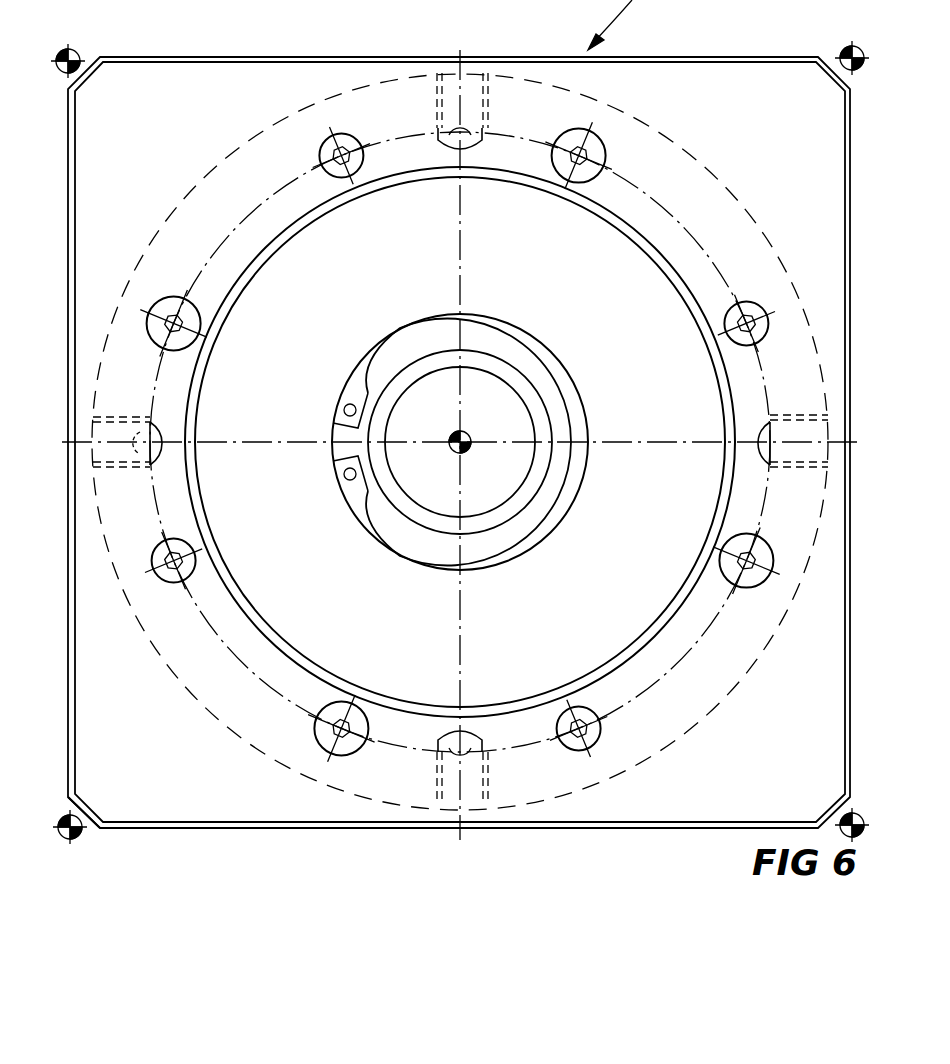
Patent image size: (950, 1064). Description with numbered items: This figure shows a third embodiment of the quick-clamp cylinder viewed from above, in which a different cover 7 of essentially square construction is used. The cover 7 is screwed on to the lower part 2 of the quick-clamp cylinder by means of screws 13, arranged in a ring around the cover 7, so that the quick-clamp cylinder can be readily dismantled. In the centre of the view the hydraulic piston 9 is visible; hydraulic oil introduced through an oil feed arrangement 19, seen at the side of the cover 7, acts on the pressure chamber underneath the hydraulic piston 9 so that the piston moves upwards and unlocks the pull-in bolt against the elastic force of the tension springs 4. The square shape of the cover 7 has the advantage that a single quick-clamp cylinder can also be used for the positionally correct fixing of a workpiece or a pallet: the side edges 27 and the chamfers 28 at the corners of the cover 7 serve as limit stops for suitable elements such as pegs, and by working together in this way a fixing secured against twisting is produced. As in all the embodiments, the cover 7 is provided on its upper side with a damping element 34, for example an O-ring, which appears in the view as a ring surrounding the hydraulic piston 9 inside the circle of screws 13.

The lower part 2 is at (123, 7).
The tension springs 4 is at (212, 7).
The cover 7 is at (815, 235).
The hydraulic piston 9 is at (304, 7).
The screws 13 is at (595, 147).
The oil feed arrangement 19 is at (808, 447).
The side edges 27 is at (560, 827).
The chamfers 28 is at (92, 824).
The damping element 34 is at (682, 600).